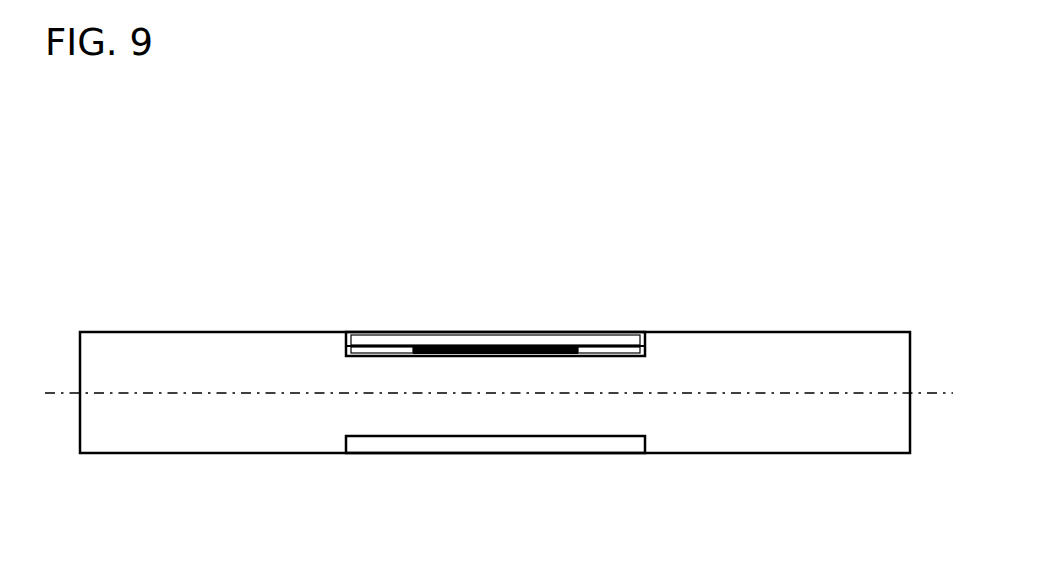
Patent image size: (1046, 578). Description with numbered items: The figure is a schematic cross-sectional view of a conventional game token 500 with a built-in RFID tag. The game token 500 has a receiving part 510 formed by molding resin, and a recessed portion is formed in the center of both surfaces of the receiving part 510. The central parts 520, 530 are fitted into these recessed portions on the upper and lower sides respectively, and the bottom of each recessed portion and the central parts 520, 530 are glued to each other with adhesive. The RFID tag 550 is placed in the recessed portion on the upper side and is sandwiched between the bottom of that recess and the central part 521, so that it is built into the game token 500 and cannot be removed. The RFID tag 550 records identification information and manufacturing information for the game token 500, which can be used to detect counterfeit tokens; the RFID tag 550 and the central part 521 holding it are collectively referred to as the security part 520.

The game token 500 is at (499, 383).
The receiving part 510 is at (202, 331).
The security part 520 is at (495, 283).
The central part 521 is at (452, 332).
The RFID tag 550 is at (434, 246).
The central part 530 is at (496, 454).